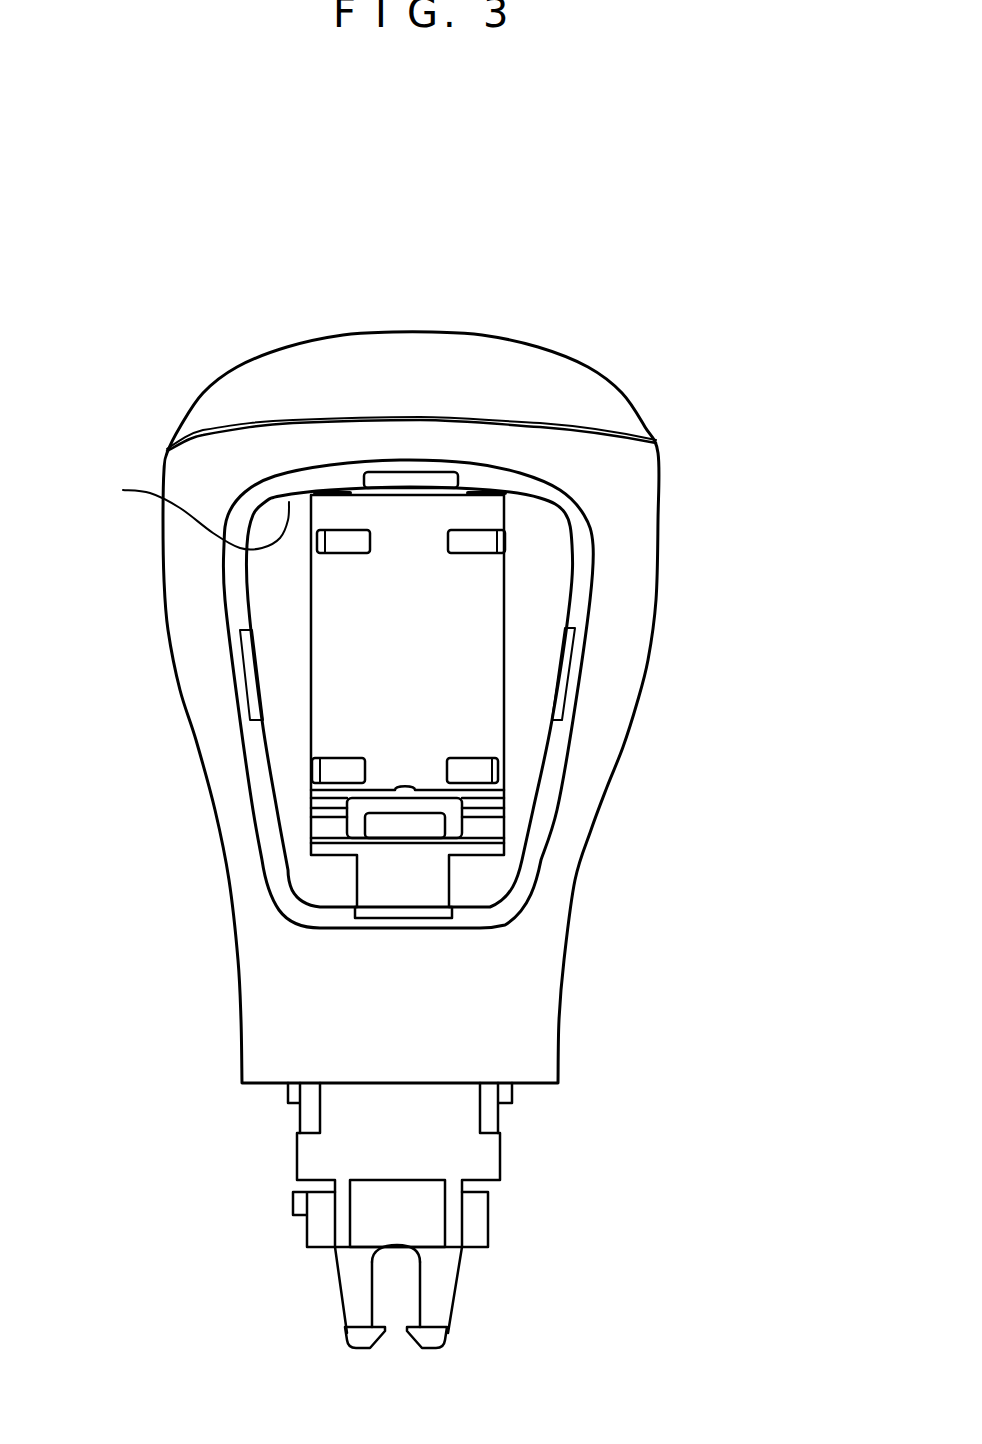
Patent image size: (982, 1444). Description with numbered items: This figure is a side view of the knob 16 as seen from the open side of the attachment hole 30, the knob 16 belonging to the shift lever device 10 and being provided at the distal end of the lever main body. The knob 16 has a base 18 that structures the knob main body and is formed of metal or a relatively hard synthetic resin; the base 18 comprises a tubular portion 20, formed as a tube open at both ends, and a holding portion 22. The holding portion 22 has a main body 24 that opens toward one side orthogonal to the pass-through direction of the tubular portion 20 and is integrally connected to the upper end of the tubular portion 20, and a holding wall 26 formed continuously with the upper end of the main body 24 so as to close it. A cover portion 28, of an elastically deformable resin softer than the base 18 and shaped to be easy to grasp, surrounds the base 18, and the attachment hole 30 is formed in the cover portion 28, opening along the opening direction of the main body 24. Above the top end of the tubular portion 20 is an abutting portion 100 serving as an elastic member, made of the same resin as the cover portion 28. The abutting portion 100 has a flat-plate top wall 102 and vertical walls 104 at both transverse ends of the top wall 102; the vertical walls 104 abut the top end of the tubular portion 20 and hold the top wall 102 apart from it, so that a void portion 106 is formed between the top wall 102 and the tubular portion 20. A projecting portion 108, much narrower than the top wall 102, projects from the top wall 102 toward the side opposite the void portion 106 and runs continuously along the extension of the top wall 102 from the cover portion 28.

The shift lever device 10 is at (411, 633).
The knob 16 is at (509, 279).
The base 18 is at (515, 694).
The tubular portion 20 is at (472, 838).
The holding portion 22 is at (608, 590).
The main body 24 is at (443, 605).
The holding wall 26 is at (473, 470).
The cover portion 28 is at (372, 332).
The attachment hole 30 is at (175, 511).
The abutting portion 100 is at (386, 778).
The top wall 102 is at (437, 797).
The vertical walls 104 is at (342, 820).
The void portion 106 is at (412, 823).
The projecting portion 108 is at (405, 789).